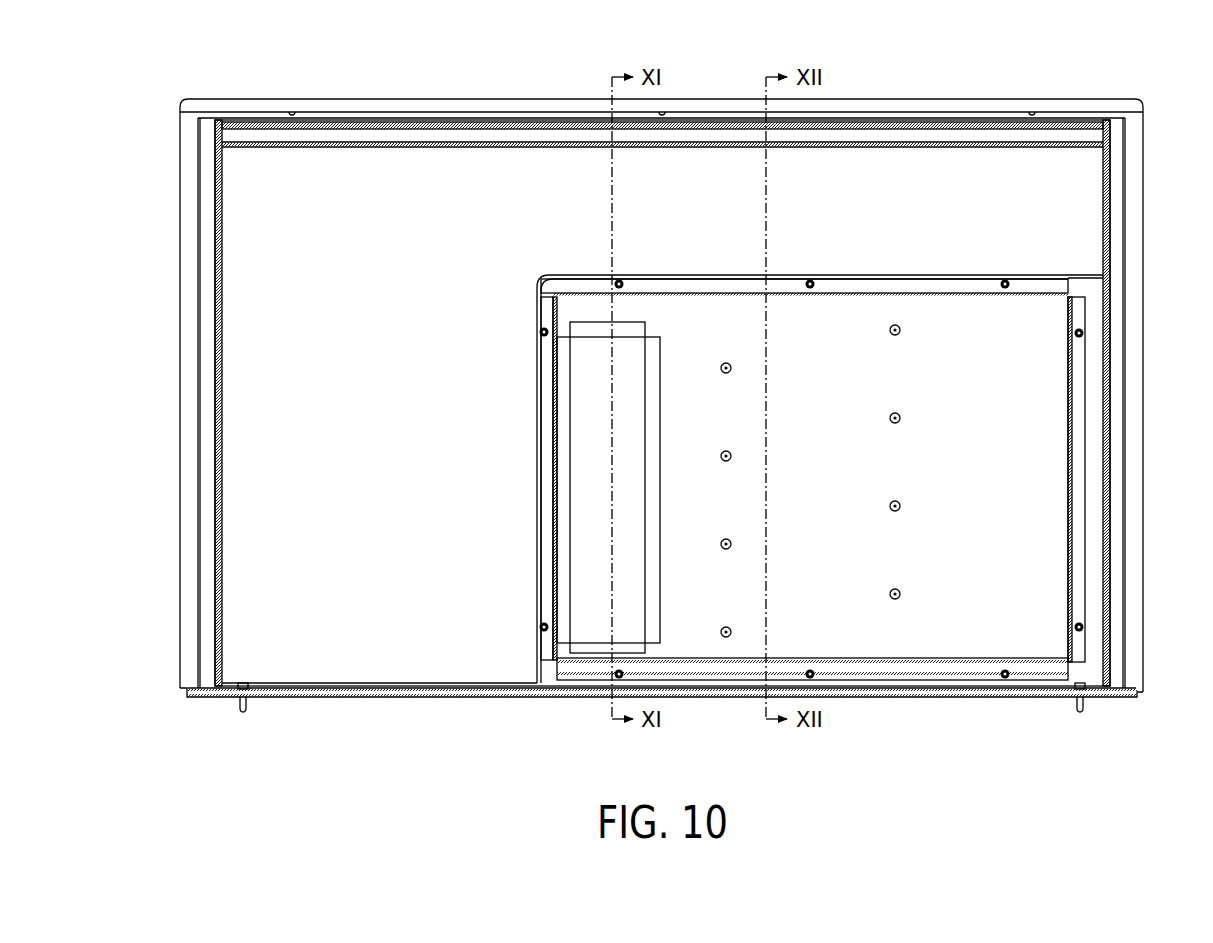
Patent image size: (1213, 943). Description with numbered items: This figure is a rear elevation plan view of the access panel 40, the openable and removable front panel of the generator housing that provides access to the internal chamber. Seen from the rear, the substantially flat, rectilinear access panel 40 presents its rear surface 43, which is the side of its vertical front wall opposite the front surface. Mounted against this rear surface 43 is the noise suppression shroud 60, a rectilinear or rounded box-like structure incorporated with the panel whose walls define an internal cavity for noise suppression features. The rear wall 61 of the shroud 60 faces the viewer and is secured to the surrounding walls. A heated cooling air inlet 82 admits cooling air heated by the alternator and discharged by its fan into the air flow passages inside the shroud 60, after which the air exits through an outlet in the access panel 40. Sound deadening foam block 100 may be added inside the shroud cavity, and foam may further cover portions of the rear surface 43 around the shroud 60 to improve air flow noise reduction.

The access panel 40 is at (195, 78).
The noise suppression shroud 60 is at (530, 276).
The rear wall 61 is at (1048, 374).
The heated cooling air inlet 82 is at (566, 503).
The rear surface 43 is at (1092, 671).
The foam block 100 is at (407, 660).